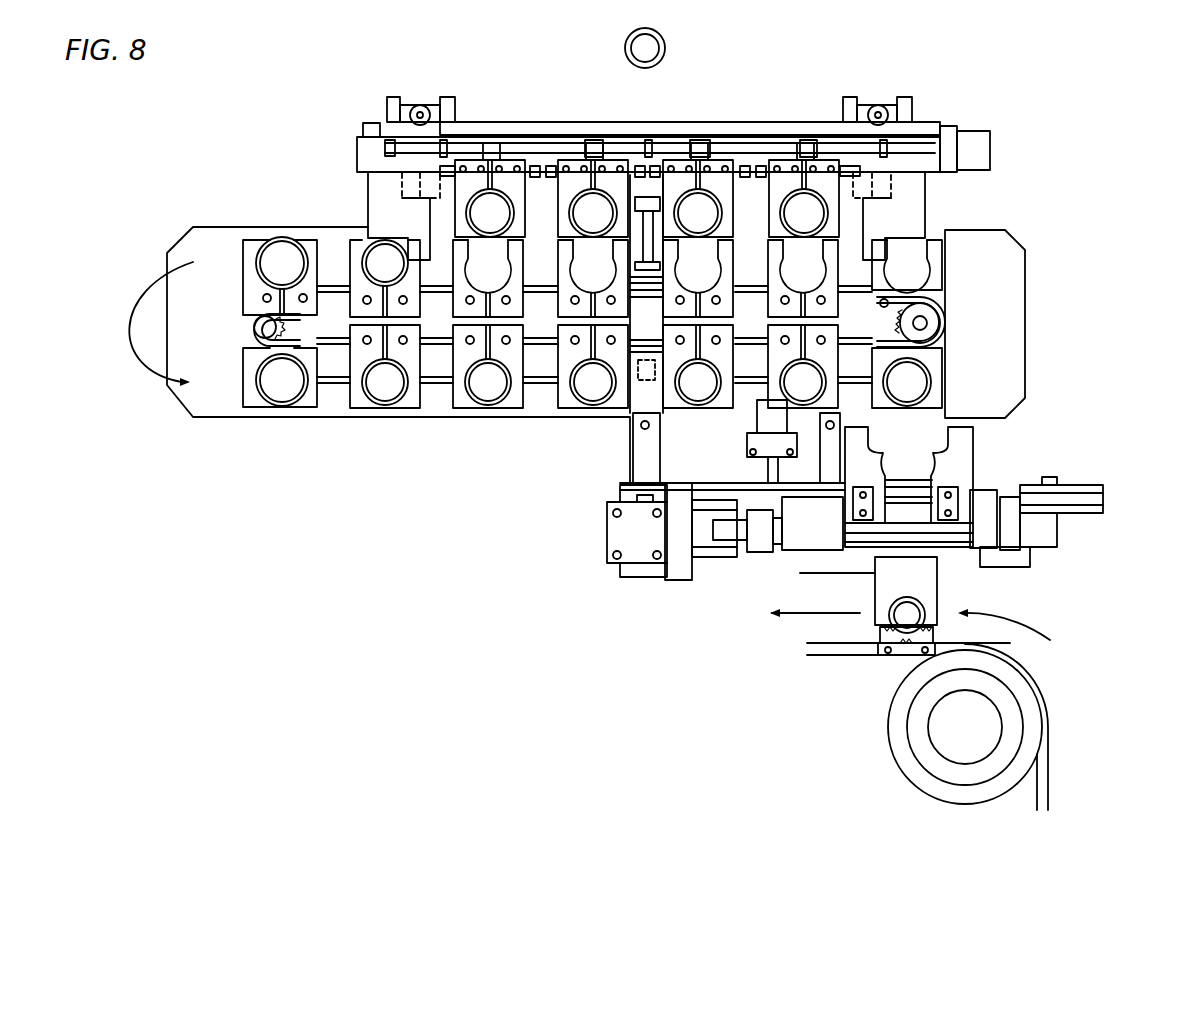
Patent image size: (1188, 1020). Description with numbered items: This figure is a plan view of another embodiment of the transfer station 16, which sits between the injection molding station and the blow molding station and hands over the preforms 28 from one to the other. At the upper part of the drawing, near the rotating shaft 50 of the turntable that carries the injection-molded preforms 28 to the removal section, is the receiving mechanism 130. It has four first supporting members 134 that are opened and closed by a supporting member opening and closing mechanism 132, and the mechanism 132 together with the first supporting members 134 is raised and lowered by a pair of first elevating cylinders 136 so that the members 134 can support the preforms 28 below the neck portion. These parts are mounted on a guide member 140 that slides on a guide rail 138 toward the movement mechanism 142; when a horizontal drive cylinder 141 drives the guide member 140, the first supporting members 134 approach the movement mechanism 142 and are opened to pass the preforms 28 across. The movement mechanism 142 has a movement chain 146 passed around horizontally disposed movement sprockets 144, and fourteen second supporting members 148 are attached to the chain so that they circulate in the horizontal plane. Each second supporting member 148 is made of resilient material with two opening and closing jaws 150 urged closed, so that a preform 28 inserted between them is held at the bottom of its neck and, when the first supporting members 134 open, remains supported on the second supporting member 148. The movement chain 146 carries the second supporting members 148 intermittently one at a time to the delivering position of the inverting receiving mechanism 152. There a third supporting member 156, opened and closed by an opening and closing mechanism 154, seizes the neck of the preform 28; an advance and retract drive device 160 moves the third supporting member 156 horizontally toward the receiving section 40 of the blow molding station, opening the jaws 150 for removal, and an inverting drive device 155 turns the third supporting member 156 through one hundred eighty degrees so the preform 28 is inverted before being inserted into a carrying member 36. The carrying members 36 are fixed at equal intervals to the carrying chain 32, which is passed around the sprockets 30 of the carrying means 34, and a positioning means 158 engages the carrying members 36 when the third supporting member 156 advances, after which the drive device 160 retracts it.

The transfer station 16 is at (150, 235).
The preforms 28 is at (493, 198).
The sprockets 30 is at (925, 760).
The carrying chain 32 is at (1020, 678).
The carrying means 34 is at (1060, 744).
The carrying members 36 is at (872, 650).
The receiving section 40 is at (820, 632).
The rotating shaft 50 is at (668, 50).
The receiving mechanism 130 is at (986, 112).
The supporting member opening and closing mechanism 132 is at (737, 138).
The first supporting members 134 is at (612, 180).
The first elevating cylinders 136 is at (422, 104).
The guide rail 138 is at (408, 222).
The guide member 140 is at (400, 188).
The horizontal drive cylinder 141 is at (638, 385).
The movement mechanism 142 is at (1036, 248).
The movement sprockets 144 is at (262, 334).
The movement chain 146 is at (330, 418).
The second supporting members 148 is at (250, 286).
The opening and closing jaws 150 is at (364, 442).
The inverting receiving mechanism 152 is at (1036, 457).
The opening and closing mechanism 154 is at (1075, 490).
The inverting drive device 155 is at (607, 540).
The third supporting member 156 is at (863, 473).
The positioning means 158 is at (937, 598).
The advance and retract drive device 160 is at (760, 425).